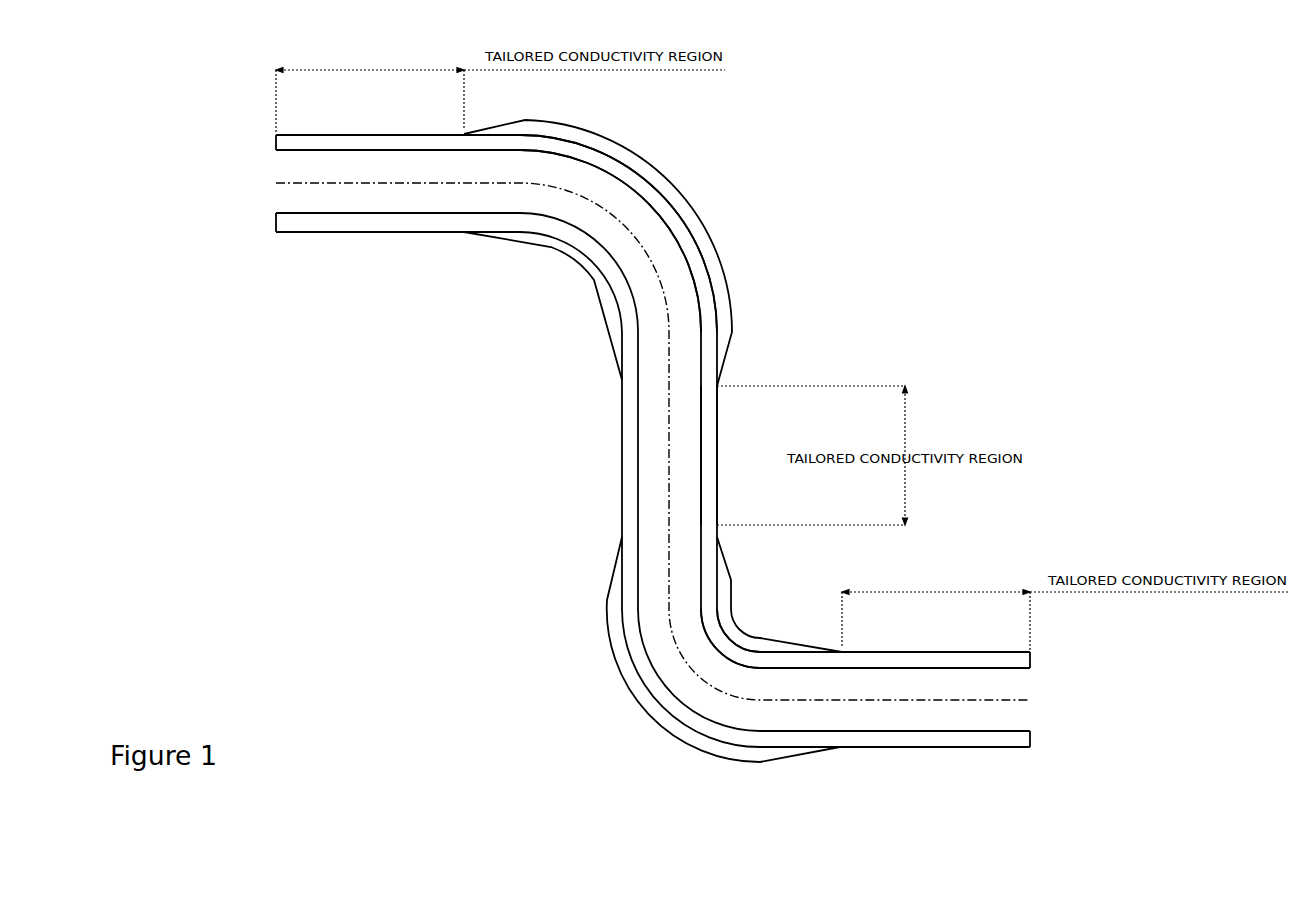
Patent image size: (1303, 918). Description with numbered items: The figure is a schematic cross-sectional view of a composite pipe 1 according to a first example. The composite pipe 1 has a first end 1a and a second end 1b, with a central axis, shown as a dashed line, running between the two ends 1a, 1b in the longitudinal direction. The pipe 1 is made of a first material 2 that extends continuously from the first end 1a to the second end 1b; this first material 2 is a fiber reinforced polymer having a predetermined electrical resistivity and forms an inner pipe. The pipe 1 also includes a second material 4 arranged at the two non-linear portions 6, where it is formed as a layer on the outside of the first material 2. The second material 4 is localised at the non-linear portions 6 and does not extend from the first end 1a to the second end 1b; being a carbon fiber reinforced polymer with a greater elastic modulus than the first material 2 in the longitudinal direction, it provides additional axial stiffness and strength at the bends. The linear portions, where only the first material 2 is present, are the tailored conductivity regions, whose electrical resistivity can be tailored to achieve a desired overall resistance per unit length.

The composite pipe 1 is at (912, 291).
The first end 1a is at (265, 181).
The second end 1b is at (1046, 705).
The first material 2 is at (708, 443).
The second material 4 is at (717, 272).
The non-linear portions 6 is at (680, 171).